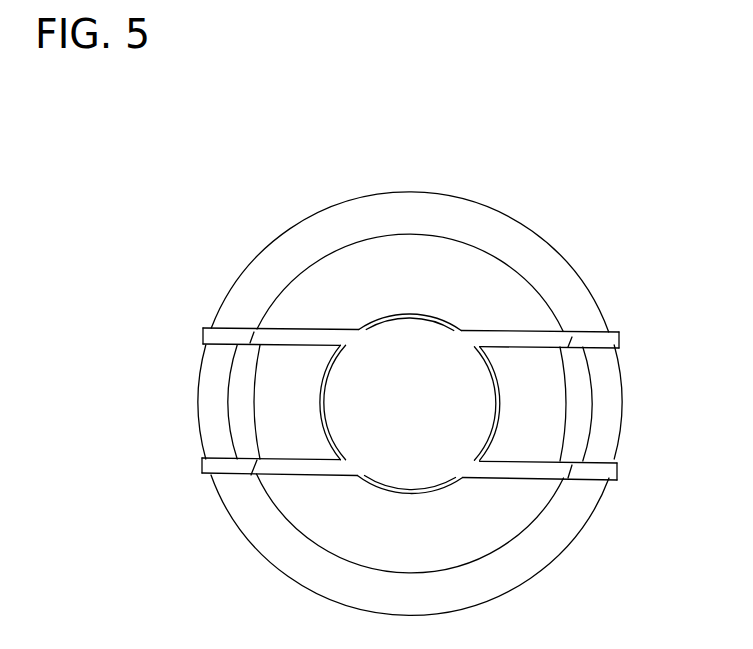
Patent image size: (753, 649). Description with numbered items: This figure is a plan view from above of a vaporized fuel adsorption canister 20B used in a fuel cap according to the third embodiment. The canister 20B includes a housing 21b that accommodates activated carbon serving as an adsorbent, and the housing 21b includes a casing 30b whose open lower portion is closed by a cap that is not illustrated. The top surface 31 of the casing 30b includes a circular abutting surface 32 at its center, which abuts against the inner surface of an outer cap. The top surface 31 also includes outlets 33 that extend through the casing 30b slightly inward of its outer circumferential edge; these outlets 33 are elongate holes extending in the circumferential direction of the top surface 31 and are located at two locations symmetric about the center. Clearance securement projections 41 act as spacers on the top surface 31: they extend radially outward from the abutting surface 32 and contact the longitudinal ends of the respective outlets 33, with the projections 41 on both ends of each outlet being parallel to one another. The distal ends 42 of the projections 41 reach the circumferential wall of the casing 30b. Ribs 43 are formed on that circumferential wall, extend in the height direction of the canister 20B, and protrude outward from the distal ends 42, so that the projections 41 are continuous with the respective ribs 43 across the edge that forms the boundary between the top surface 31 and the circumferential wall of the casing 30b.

The vaporized fuel adsorption canister 20B is at (444, 137).
The housing 21b is at (306, 206).
The casing 30b is at (258, 253).
The top surface 31 is at (508, 290).
The abutting surface 32 is at (413, 466).
The outlets 33 is at (232, 392).
The clearance securement projections 41 is at (287, 336).
The distal ends 42 is at (215, 331).
The ribs 43 is at (203, 342).